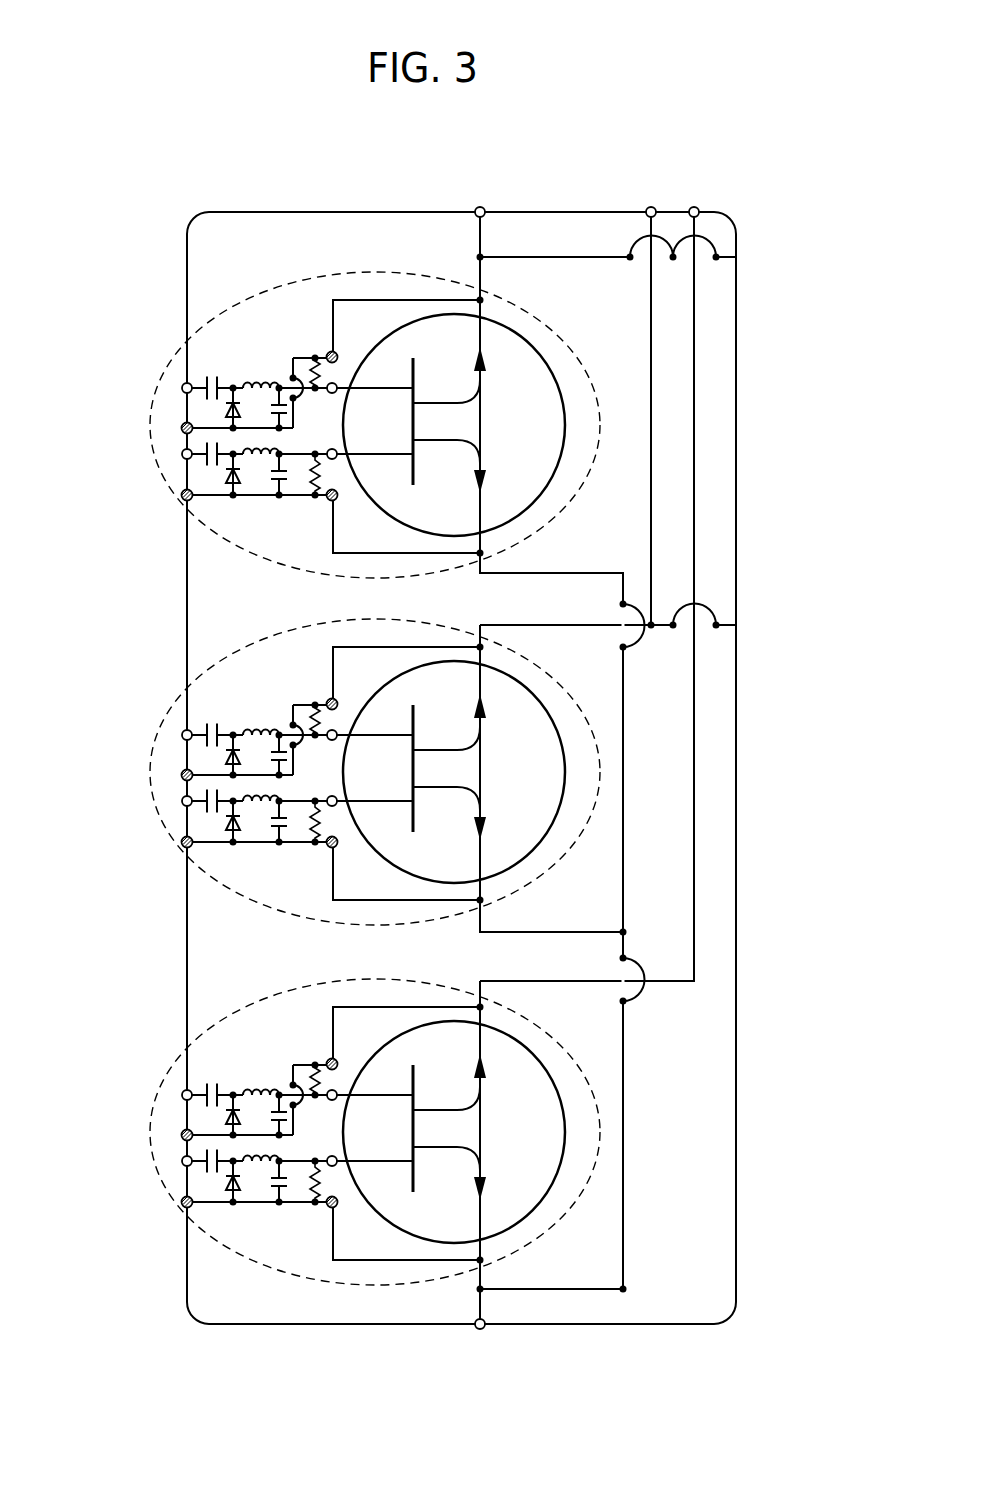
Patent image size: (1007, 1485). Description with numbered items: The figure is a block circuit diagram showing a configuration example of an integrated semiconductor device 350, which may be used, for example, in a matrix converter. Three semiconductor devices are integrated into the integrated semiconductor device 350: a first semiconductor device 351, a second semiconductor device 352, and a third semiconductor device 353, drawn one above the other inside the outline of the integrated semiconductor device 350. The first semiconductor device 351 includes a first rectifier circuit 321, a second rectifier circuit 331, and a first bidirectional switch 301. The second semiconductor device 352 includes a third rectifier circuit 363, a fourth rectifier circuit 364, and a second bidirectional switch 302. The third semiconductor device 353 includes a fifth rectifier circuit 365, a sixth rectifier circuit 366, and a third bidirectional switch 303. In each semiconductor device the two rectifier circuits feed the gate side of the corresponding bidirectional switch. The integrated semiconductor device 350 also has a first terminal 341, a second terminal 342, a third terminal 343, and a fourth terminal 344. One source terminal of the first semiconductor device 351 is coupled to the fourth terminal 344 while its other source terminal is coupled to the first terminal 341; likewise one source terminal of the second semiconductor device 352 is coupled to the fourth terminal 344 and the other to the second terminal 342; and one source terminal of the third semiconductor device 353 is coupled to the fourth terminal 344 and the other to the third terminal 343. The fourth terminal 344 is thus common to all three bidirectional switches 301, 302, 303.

The first bidirectional switch 301 is at (543, 423).
The second bidirectional switch 302 is at (569, 774).
The third bidirectional switch 303 is at (569, 1134).
The first rectifier circuit 321 is at (208, 413).
The second rectifier circuit 331 is at (207, 472).
The first terminal 341 is at (480, 207).
The second terminal 342 is at (651, 207).
The third terminal 343 is at (694, 207).
The fourth terminal 344 is at (480, 1330).
The integrated semiconductor device 350 is at (738, 1263).
The first semiconductor device 351 is at (265, 322).
The second semiconductor device 352 is at (351, 764).
The third semiconductor device 353 is at (351, 1124).
The third rectifier circuit 363 is at (202, 728).
The fourth rectifier circuit 364 is at (209, 830).
The fifth rectifier circuit 365 is at (202, 1088).
The sixth rectifier circuit 366 is at (209, 1190).